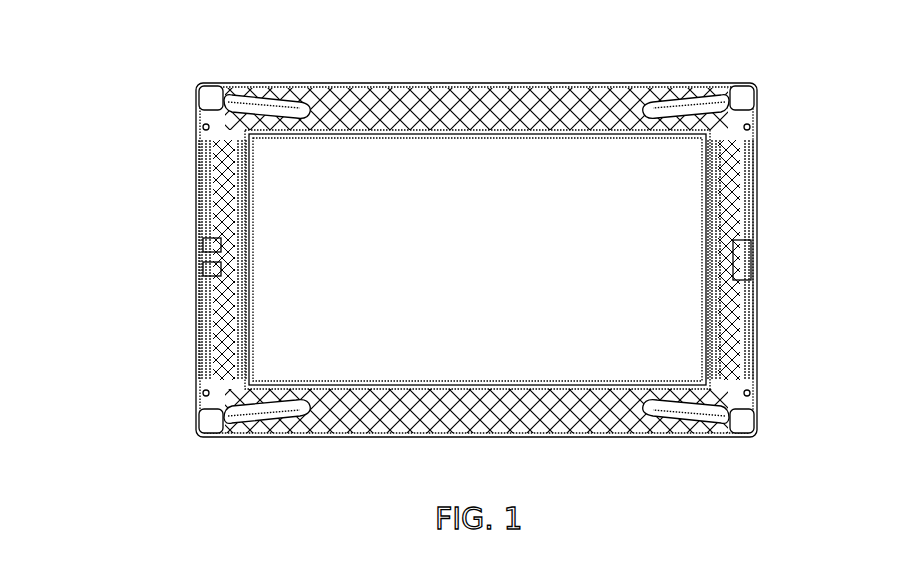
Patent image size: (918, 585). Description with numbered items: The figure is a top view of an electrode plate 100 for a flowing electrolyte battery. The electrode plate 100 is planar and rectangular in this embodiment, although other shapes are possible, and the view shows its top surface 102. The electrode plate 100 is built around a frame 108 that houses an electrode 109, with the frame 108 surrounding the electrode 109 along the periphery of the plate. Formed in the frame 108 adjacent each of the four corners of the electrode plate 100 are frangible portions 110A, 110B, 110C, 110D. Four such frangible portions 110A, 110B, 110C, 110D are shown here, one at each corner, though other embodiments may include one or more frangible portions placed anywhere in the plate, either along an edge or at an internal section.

The electrode plate 100 is at (120, 110).
The top surface 102 is at (412, 200).
The frame 108 is at (512, 105).
The electrode 109 is at (563, 155).
The frangible portion 110A is at (210, 78).
The frangible portion 110B is at (740, 78).
The frangible portion 110C is at (740, 445).
The frangible portion 110D is at (185, 425).